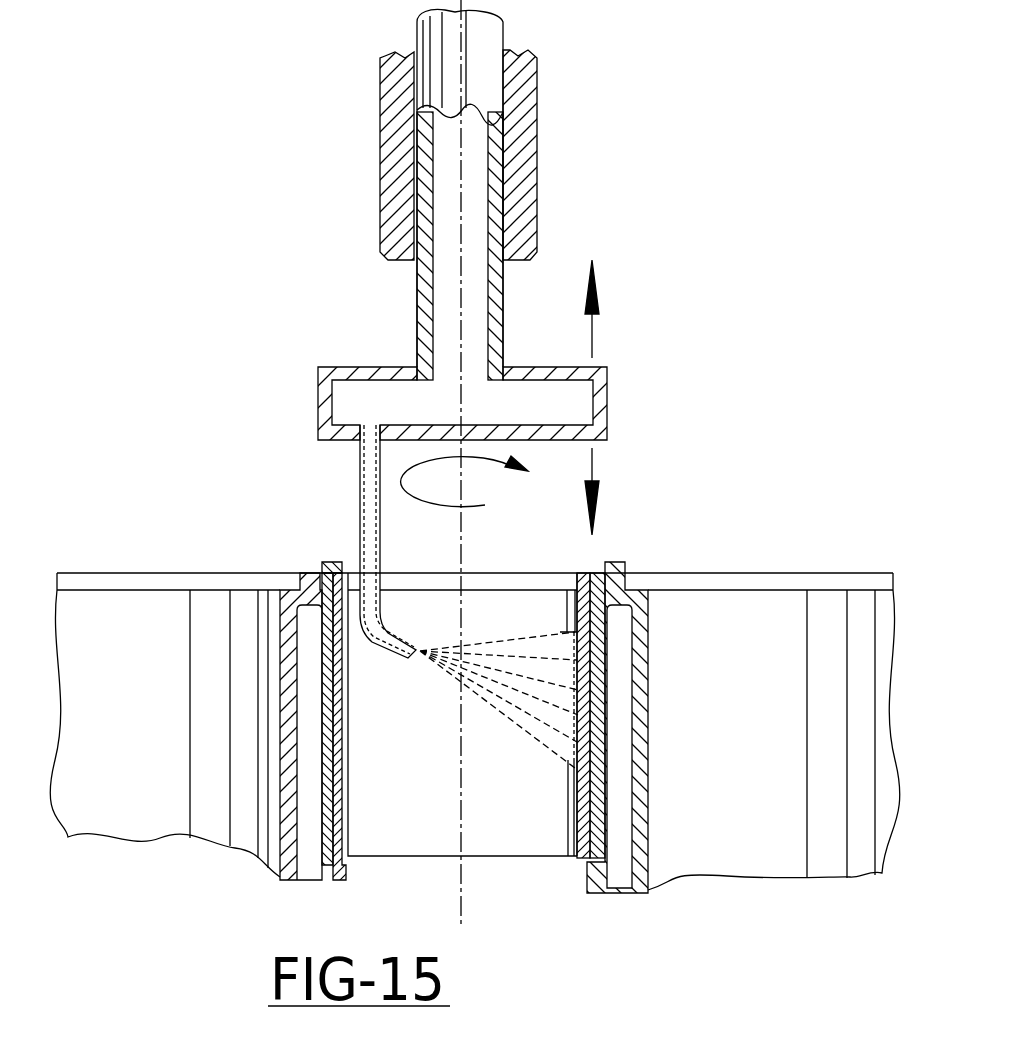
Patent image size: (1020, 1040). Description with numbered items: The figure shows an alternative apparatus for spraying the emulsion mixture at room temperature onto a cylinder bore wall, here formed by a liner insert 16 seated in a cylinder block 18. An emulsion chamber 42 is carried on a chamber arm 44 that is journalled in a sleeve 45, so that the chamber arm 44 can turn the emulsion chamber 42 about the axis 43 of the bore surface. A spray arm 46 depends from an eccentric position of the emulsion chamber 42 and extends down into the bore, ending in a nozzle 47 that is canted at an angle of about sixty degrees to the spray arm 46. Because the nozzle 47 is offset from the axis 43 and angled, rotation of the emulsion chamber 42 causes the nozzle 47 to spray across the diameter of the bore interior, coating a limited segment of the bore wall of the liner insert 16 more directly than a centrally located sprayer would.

The liner insert 16 is at (340, 748).
The cylinder block 18 is at (290, 850).
The emulsion chamber 42 is at (607, 400).
The axis 43 is at (463, 560).
The chamber arm 44 is at (498, 292).
The sleeve 45 is at (523, 100).
The spray arm 46 is at (360, 490).
The nozzle 47 is at (431, 596).